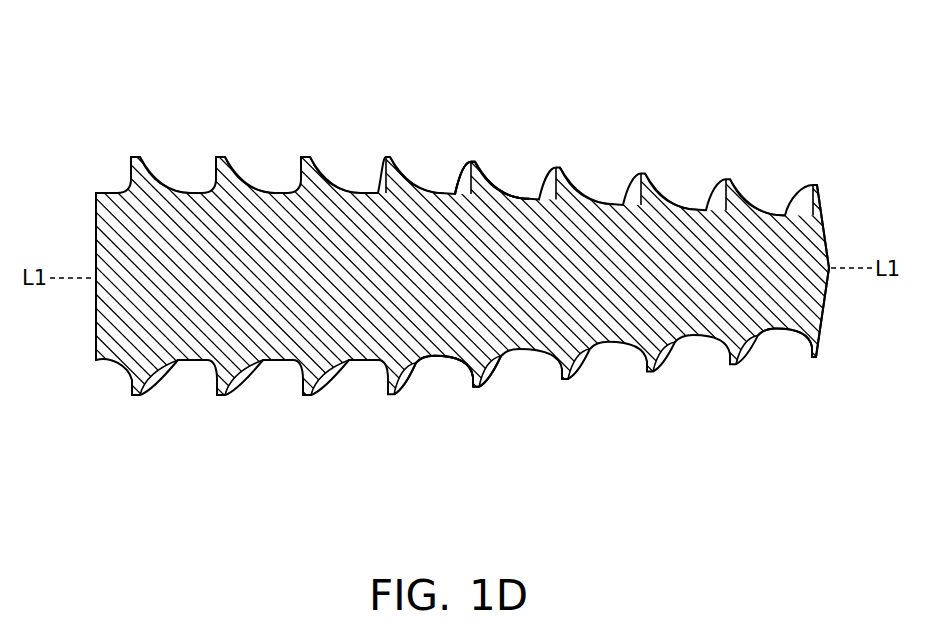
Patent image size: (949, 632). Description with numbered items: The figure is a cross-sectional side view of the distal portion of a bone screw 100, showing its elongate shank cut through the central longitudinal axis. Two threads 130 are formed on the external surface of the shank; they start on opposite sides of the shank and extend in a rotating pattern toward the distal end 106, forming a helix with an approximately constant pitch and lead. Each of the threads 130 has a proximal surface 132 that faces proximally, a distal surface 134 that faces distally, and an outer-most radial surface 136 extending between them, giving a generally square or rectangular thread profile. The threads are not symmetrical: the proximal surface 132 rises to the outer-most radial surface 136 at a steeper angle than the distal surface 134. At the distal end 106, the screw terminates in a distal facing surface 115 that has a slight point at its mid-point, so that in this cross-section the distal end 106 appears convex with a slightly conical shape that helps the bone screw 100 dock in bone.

The bone screw 100 is at (201, 77).
The distal end 106 is at (789, 381).
The distal facing surface 115 is at (843, 196).
The threads 130 is at (438, 153).
The proximal surface 132 is at (459, 187).
The distal surface 134 is at (510, 187).
The outer-most radial surface 136 is at (473, 163).